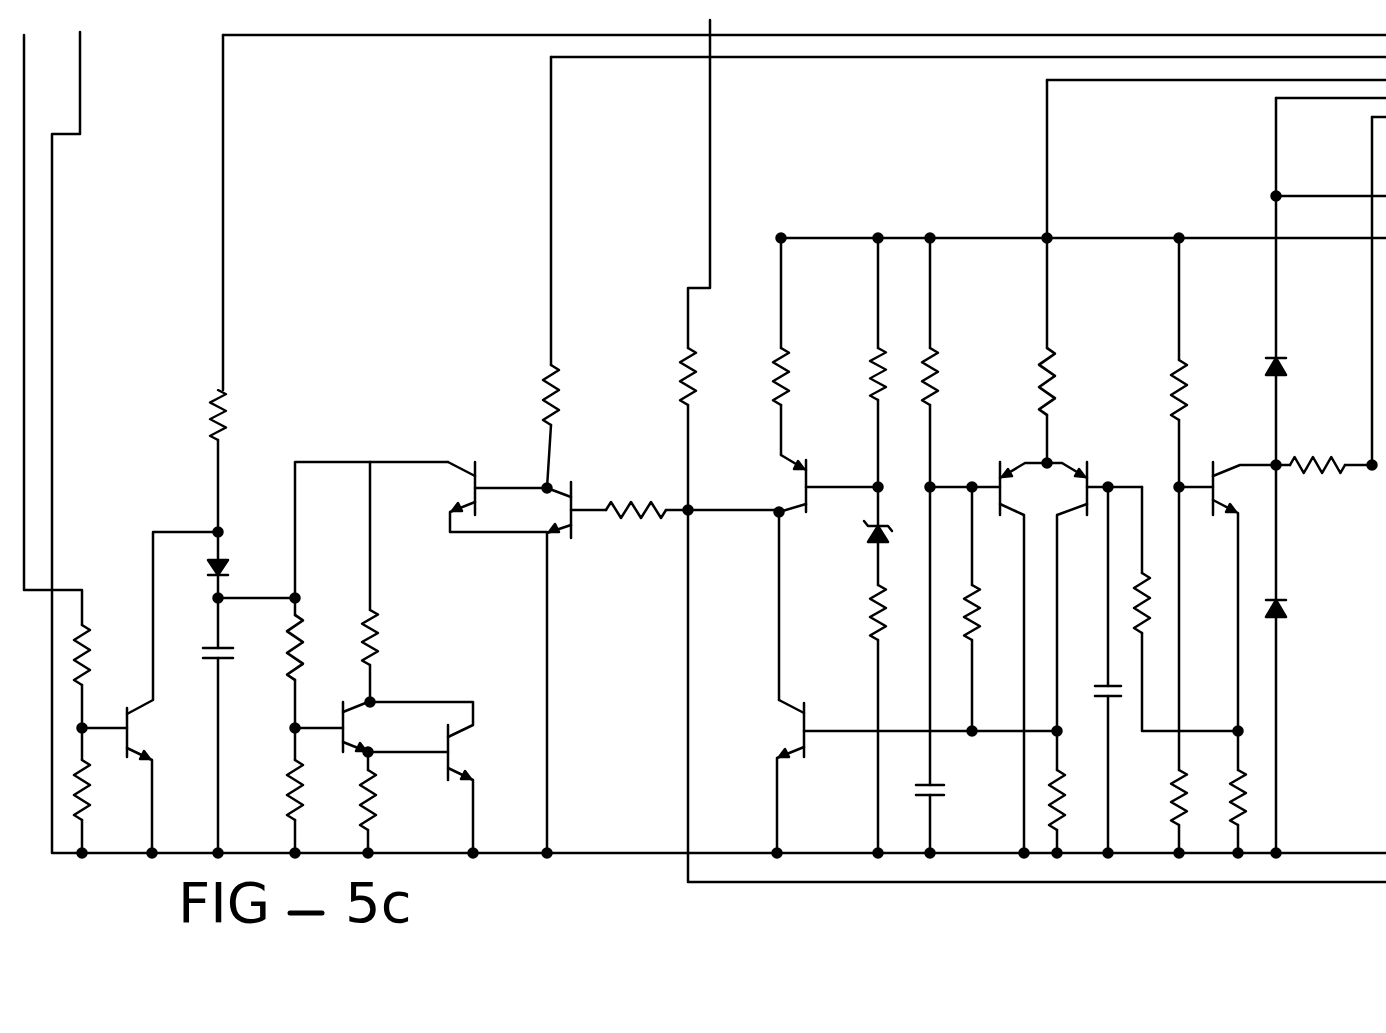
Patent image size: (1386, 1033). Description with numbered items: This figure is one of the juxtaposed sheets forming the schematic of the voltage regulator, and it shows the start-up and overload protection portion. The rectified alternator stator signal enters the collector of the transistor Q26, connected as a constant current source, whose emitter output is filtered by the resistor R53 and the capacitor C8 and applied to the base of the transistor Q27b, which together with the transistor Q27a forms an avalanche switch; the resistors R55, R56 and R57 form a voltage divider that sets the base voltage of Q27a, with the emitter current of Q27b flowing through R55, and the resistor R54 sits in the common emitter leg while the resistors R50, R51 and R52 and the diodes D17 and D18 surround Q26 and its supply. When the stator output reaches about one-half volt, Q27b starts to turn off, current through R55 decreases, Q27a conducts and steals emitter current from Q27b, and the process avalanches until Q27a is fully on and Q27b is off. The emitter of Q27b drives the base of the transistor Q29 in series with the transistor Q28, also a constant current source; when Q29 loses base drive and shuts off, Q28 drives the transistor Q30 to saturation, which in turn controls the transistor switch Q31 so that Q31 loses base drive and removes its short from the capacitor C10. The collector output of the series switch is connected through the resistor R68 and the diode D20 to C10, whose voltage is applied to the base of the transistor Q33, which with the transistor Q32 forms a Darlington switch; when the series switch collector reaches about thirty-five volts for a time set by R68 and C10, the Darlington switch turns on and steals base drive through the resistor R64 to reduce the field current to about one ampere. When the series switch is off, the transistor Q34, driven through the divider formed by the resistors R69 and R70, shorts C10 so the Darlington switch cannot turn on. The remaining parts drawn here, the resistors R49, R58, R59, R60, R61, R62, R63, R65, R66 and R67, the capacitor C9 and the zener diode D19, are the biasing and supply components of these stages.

The resistor R49 is at (1324, 488).
The resistor R50 is at (1211, 365).
The resistor R51 is at (1213, 794).
The resistor R52 is at (1147, 672).
The resistor R53 is at (1140, 612).
The resistor R54 is at (1079, 408).
The resistor R55 is at (1047, 797).
The resistor R56 is at (966, 511).
The resistor R57 is at (1000, 611).
The resistor R58 is at (849, 365).
The resistor R59 is at (843, 721).
The resistor R60 is at (748, 346).
The resistor R61 is at (659, 376).
The resistor R62 is at (692, 492).
The resistor R63 is at (587, 426).
The resistor R64 is at (402, 584).
The resistor R65 is at (399, 805).
The resistor R66 is at (263, 679).
The resistor R67 is at (266, 809).
The resistor R68 is at (255, 463).
The resistor R69 is at (112, 692).
The resistor R70 is at (112, 809).
The transistor Q26 is at (1230, 581).
The transistor Q27a is at (1001, 640).
The transistor Q27b is at (1096, 579).
The transistor Q28 is at (802, 577).
The transistor Q29 is at (882, 779).
The transistor Q30 is at (580, 670).
The transistor switch Q31 is at (498, 477).
The transistor Q32 is at (449, 780).
The transistor Q33 is at (371, 729).
The transistor Q34 is at (150, 695).
The diode D17 is at (1312, 474).
The diode D18 is at (1312, 721).
The zener diode D19 is at (846, 536).
The diode D20 is at (254, 567).
The capacitor C8 is at (1090, 672).
The capacitor C9 is at (950, 821).
The capacitor C10 is at (242, 728).